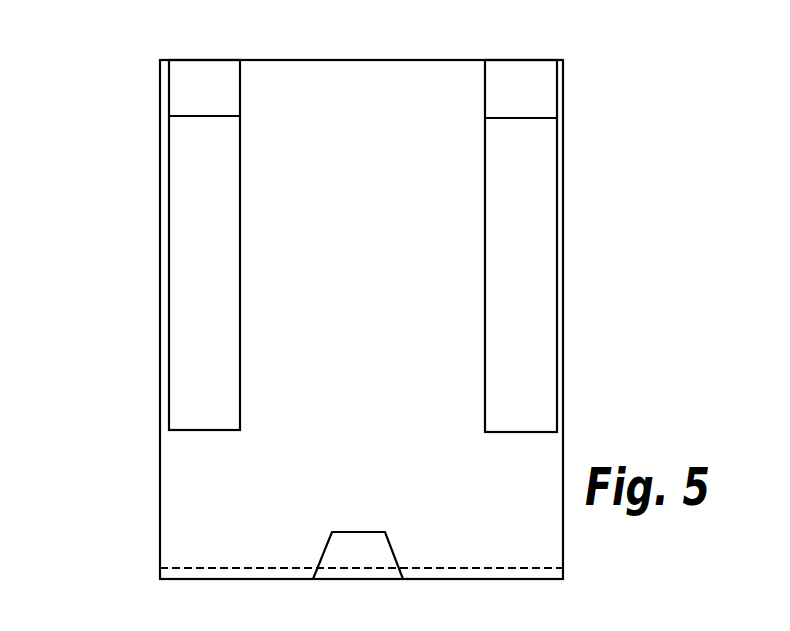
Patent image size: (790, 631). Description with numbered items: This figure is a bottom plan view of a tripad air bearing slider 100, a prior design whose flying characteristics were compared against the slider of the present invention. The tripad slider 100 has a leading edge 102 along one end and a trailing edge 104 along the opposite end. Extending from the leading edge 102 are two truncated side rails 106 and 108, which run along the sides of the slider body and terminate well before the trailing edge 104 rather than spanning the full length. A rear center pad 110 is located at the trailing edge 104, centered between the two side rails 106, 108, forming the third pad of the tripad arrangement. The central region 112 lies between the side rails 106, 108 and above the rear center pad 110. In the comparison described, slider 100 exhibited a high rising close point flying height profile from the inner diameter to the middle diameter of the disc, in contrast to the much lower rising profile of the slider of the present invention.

The tripad slider 100 is at (120, 122).
The leading edge 102 is at (342, 60).
The trailing edge 104 is at (247, 579).
The truncated side rail 106 is at (530, 213).
The truncated side rail 108 is at (200, 234).
The rear center pad 110 is at (363, 579).
The central region 112 is at (373, 239).